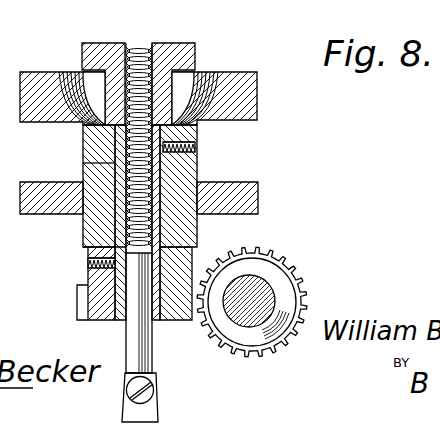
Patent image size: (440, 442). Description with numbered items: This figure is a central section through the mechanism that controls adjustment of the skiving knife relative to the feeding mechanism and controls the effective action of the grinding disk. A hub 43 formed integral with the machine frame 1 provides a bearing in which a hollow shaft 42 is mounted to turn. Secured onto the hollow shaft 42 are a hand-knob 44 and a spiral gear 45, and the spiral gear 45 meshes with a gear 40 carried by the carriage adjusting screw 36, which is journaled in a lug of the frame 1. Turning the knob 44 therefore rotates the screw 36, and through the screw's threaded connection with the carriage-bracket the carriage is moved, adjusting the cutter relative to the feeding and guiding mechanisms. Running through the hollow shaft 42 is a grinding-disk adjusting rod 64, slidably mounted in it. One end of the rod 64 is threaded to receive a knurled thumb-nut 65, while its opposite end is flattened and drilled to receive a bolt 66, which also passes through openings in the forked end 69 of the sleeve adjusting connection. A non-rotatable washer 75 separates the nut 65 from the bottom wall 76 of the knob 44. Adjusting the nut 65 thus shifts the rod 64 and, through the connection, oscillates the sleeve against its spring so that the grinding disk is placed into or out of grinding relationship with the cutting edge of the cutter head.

The machine frame 1 is at (259, 184).
The carriage adjusting screw 36 is at (273, 290).
The spiral gear 40 is at (293, 267).
The hollow shaft 42 is at (162, 323).
The hub 43 is at (190, 170).
The hand-knob 44 is at (236, 77).
The spiral gear 45 is at (88, 320).
The grinding-disk adjusting rod 64 is at (133, 320).
The knurled thumb-nut 65 is at (173, 44).
The bolt 66 is at (152, 390).
The forked end 69 is at (154, 412).
The non-rotatable washer 75 is at (178, 126).
The bottom wall 76 is at (78, 73).